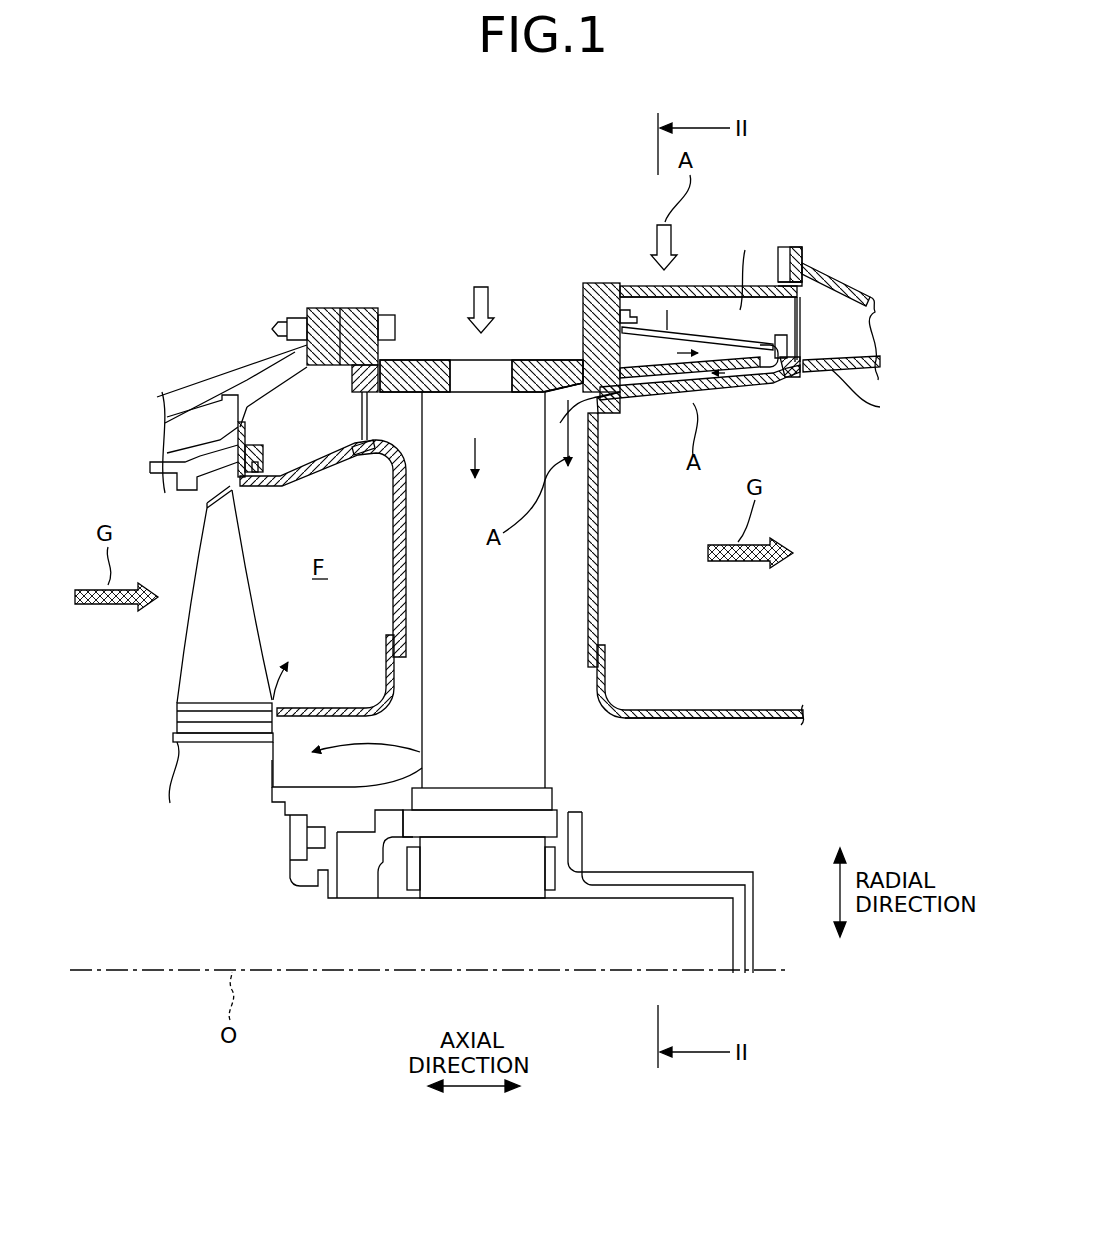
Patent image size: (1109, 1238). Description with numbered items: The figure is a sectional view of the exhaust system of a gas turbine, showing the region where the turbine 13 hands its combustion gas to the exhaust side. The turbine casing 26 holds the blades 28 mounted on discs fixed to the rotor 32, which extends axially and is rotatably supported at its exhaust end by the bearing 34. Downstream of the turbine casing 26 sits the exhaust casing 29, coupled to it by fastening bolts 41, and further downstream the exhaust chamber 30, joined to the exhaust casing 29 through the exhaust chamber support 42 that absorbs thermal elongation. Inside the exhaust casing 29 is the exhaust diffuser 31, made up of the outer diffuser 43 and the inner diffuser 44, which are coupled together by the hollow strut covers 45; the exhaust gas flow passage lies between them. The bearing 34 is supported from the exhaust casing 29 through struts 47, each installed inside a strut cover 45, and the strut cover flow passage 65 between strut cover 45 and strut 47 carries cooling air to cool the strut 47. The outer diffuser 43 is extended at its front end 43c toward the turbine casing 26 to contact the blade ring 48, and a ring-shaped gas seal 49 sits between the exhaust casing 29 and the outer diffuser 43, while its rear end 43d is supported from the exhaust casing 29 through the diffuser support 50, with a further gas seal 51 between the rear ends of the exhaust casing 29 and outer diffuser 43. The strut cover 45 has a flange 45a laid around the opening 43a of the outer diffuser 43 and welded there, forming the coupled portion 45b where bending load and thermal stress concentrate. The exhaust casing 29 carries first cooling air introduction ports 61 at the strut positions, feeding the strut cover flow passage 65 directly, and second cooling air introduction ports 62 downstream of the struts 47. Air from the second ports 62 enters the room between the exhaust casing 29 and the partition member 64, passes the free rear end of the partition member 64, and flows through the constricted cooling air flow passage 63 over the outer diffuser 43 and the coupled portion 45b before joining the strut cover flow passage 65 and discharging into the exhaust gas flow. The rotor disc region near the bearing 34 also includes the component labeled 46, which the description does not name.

The turbine 13 is at (245, 235).
The turbine casing 26 is at (190, 383).
The blade 28 is at (200, 642).
The exhaust casing 29 is at (578, 312).
The exhaust chamber 30 is at (845, 350).
The exhaust diffuser 31 is at (785, 724).
The rotor 32 is at (745, 925).
The bearing 34 is at (462, 880).
The fastening bolt 41 is at (388, 328).
The exhaust chamber support 42 is at (828, 275).
The outer diffuser 43 is at (775, 383).
The opening 43a is at (580, 400).
The front end 43c is at (255, 484).
The rear end 43d is at (800, 376).
The inner diffuser 44 is at (738, 712).
The strut cover 45 is at (600, 553).
The flange 45a is at (608, 405).
The coupled portion 45b is at (620, 405).
The rotor disc 46 is at (560, 818).
The strut 47 is at (275, 790).
The blade ring 48 is at (225, 455).
The gas seal 49 is at (360, 384).
The diffuser support 50 is at (660, 295).
The gas seal 51 is at (795, 302).
The first cooling air introduction port 61 is at (500, 372).
The second cooling air introduction port 62 is at (645, 290).
The cooling air flow passage 63 is at (648, 378).
The partition member 64 is at (720, 393).
The strut cover flow passage 65 is at (578, 612).